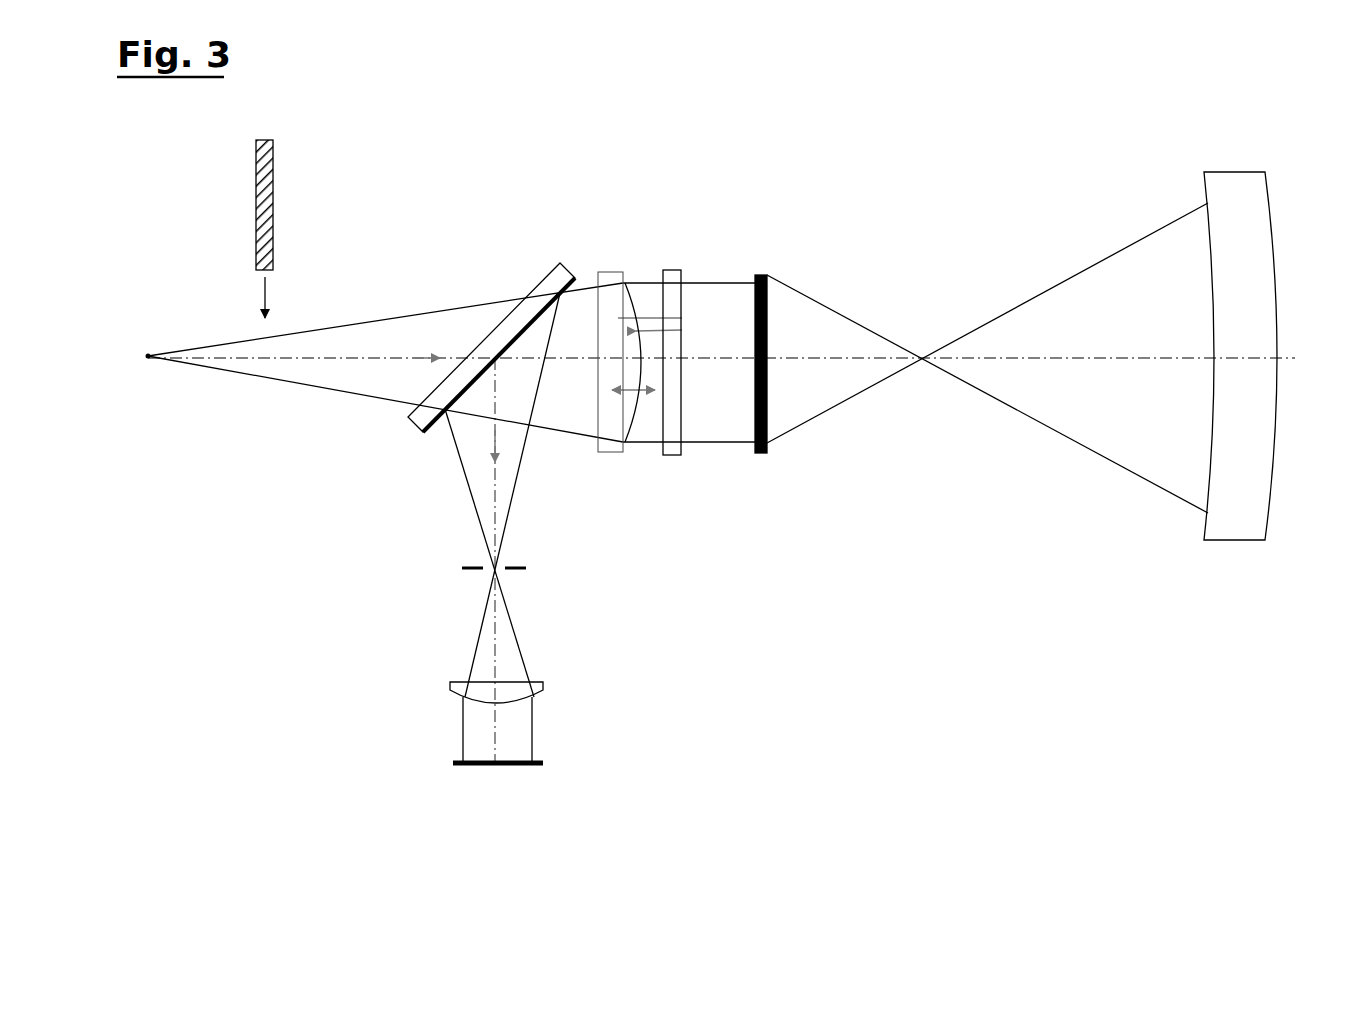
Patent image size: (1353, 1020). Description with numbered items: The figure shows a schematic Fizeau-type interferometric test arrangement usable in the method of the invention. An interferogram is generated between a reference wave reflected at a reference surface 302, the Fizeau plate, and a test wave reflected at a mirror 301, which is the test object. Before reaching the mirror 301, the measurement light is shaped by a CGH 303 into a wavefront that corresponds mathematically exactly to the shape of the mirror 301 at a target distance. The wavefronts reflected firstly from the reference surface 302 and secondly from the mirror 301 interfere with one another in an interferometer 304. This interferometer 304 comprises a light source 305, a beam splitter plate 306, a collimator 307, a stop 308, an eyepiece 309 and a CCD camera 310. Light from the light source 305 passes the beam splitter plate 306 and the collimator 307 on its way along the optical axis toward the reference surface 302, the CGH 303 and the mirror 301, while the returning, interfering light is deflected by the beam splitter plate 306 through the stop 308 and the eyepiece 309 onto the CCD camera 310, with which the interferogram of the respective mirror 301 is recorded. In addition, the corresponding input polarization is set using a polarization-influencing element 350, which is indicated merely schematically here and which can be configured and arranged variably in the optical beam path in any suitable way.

The mirror 301 is at (1225, 527).
The reference surface 302 is at (668, 445).
The CGH 303 is at (767, 447).
The interferometer 304 is at (463, 160).
The light source 305 is at (157, 358).
The beam splitter plate 306 is at (553, 282).
The collimator 307 is at (605, 445).
The stop 308 is at (438, 572).
The eyepiece 309 is at (542, 687).
The CCD camera 310 is at (545, 766).
The polarization-influencing element 350 is at (255, 190).